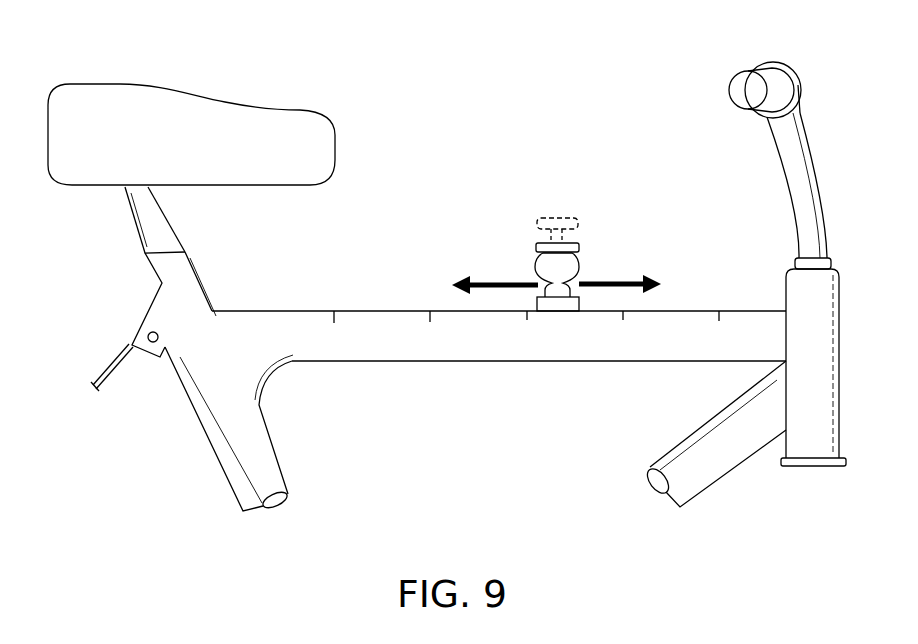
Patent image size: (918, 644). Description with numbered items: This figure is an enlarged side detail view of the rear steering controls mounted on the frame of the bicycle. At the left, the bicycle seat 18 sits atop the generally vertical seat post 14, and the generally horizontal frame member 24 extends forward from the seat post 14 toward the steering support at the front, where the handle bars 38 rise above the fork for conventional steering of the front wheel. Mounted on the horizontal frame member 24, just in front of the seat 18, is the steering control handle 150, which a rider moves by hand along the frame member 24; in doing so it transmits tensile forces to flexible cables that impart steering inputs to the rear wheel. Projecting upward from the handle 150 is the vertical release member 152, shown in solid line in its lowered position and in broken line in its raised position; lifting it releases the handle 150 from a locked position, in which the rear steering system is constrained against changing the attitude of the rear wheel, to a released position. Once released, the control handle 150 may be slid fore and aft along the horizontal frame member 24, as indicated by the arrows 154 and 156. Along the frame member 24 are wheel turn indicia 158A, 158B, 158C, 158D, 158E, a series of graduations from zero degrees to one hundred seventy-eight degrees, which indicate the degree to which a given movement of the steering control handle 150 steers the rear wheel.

The seat post 14 is at (277, 450).
The bicycle seat 18 is at (209, 100).
The horizontal frame member 24 is at (457, 372).
The handle bars 38 is at (737, 77).
The steering control handle 150 is at (602, 238).
The vertical release member 152 is at (538, 240).
The arrow 154 is at (512, 282).
The arrow 156 is at (607, 283).
The wheel turn indicia 158A is at (339, 298).
The wheel turn indicia 158B is at (440, 298).
The wheel turn indicia 158C is at (527, 320).
The wheel turn indicia 158D is at (623, 320).
The wheel turn indicia 158E is at (720, 278).